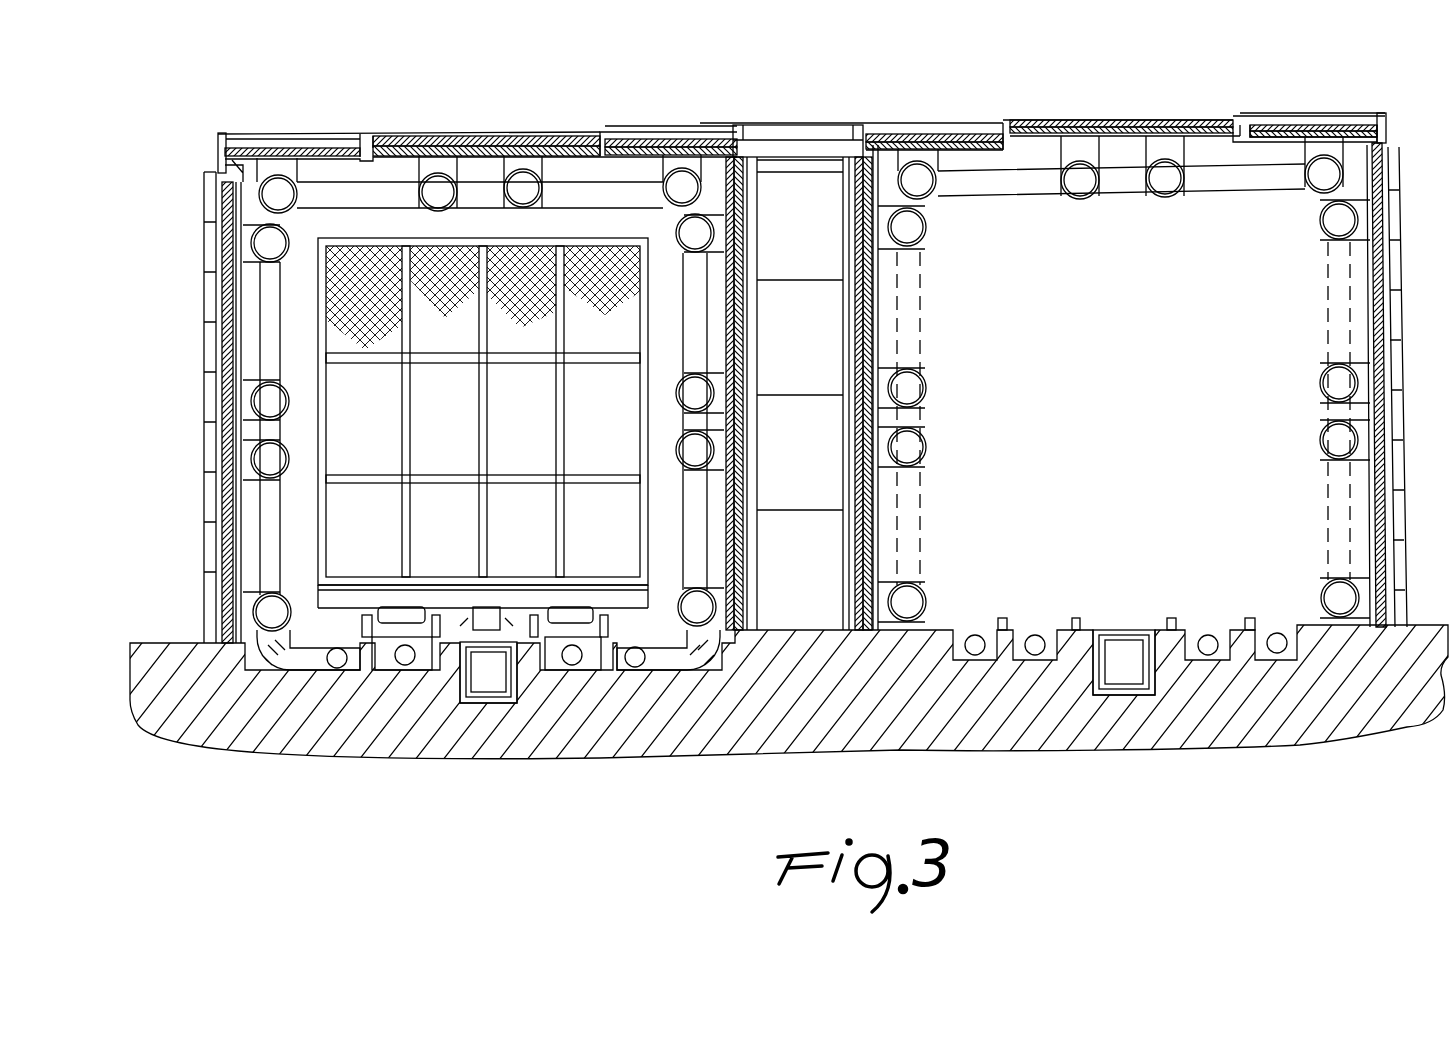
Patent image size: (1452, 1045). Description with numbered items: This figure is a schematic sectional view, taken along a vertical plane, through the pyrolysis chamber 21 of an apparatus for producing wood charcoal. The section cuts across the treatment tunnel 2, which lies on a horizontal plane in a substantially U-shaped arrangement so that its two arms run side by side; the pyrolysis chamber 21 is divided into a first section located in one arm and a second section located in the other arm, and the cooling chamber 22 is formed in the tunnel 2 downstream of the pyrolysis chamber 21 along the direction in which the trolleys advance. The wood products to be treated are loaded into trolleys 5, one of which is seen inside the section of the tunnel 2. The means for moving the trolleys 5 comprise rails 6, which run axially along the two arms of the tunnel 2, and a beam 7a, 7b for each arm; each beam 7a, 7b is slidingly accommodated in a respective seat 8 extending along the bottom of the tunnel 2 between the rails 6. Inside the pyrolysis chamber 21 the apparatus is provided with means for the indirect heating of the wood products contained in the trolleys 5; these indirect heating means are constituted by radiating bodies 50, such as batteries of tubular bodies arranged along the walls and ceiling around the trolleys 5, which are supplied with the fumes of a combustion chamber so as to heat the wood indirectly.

The treatment tunnel 2 is at (1356, 96).
The trolleys 5 is at (365, 253).
The rails 6 is at (345, 612).
The beam 7a is at (1125, 690).
The beam 7b is at (480, 707).
The seat 8 is at (448, 705).
The pyrolysis chamber 21 is at (1223, 212).
The cooling chamber 22 is at (588, 213).
The radiating bodies 50 is at (438, 190).